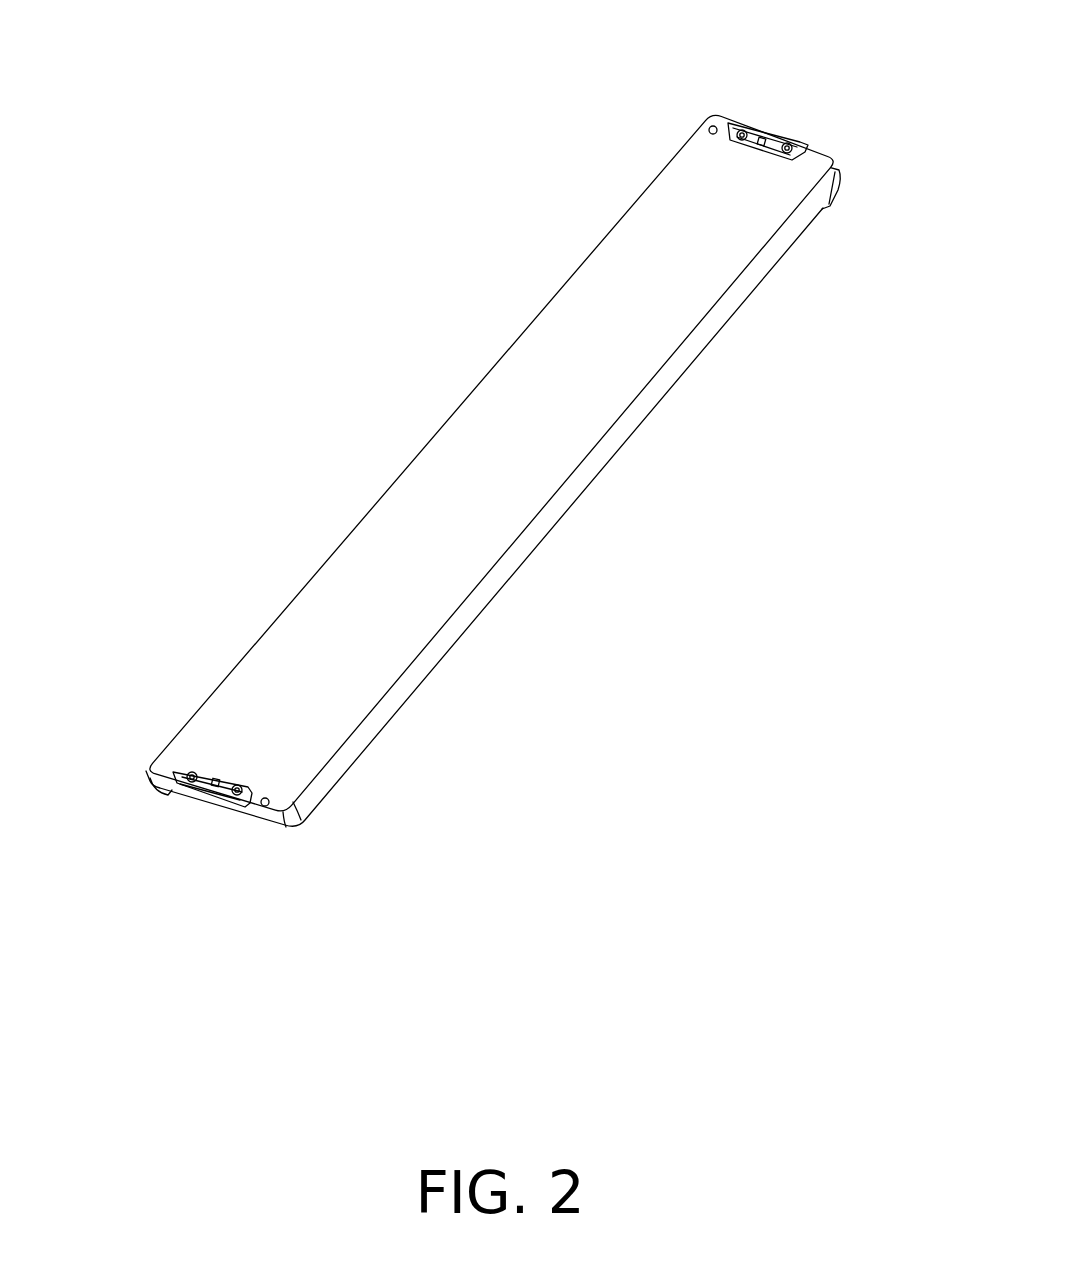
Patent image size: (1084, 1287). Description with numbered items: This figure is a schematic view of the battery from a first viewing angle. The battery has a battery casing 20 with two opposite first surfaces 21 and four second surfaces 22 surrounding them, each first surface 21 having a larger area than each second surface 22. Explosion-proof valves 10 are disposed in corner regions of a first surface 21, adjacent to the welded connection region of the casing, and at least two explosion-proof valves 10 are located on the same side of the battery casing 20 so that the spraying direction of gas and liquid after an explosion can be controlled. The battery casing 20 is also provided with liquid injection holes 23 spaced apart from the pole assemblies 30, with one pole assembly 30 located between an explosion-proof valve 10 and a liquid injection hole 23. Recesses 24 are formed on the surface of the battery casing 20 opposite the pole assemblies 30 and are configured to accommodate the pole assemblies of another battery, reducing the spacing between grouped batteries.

The explosion-proof valve 10 is at (840, 154).
The battery casing 20 is at (499, 466).
The first surface 21 is at (492, 430).
The second surface 22 is at (583, 468).
The liquid injection hole 23 is at (710, 127).
The recess 24 is at (280, 833).
The pole assembly 30 is at (752, 140).